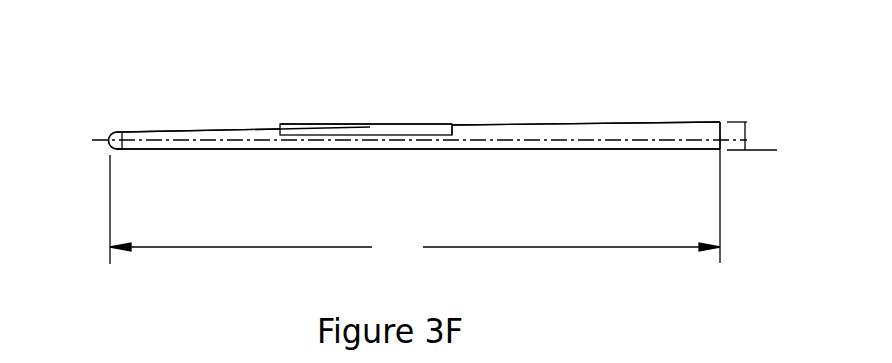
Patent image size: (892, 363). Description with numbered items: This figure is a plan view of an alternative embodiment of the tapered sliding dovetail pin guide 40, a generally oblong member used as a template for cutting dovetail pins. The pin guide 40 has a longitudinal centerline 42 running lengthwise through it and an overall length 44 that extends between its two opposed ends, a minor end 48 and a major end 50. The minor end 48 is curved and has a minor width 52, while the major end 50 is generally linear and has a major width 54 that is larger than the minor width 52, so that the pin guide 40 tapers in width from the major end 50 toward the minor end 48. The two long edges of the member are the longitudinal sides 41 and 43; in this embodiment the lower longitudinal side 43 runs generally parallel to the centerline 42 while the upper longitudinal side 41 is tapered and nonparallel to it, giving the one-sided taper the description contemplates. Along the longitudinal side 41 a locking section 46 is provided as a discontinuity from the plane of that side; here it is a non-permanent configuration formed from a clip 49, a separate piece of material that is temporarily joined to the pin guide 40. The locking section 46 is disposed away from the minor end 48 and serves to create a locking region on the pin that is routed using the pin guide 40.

The tapered sliding dovetail pin guide 40 is at (520, 122).
The longitudinal side 41 is at (590, 122).
The longitudinal centerline 42 is at (268, 141).
The longitudinal side 43 is at (498, 149).
The length 44 is at (415, 211).
The locking section 46 is at (362, 98).
The minor end 48 is at (108, 132).
The clip 49 is at (442, 124).
The major end 50 is at (683, 122).
The minor width 52 is at (122, 133).
The major width 54 is at (747, 140).